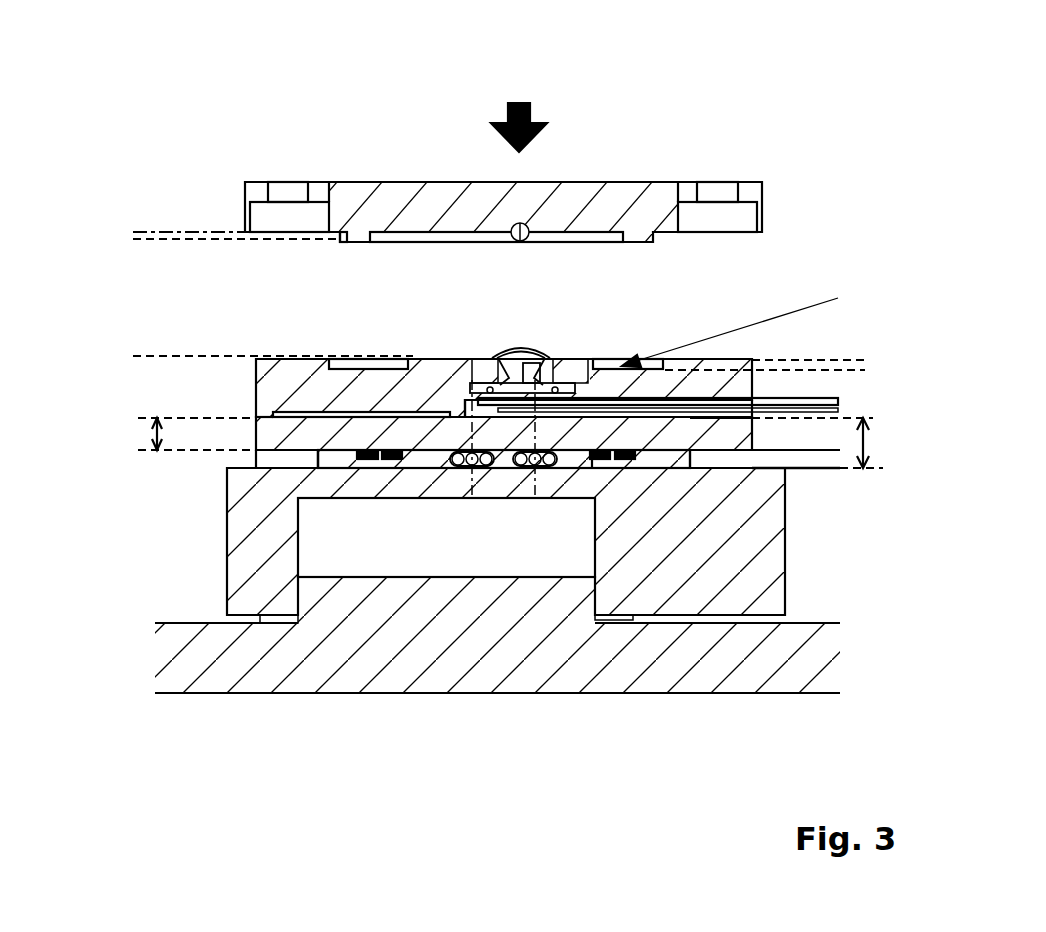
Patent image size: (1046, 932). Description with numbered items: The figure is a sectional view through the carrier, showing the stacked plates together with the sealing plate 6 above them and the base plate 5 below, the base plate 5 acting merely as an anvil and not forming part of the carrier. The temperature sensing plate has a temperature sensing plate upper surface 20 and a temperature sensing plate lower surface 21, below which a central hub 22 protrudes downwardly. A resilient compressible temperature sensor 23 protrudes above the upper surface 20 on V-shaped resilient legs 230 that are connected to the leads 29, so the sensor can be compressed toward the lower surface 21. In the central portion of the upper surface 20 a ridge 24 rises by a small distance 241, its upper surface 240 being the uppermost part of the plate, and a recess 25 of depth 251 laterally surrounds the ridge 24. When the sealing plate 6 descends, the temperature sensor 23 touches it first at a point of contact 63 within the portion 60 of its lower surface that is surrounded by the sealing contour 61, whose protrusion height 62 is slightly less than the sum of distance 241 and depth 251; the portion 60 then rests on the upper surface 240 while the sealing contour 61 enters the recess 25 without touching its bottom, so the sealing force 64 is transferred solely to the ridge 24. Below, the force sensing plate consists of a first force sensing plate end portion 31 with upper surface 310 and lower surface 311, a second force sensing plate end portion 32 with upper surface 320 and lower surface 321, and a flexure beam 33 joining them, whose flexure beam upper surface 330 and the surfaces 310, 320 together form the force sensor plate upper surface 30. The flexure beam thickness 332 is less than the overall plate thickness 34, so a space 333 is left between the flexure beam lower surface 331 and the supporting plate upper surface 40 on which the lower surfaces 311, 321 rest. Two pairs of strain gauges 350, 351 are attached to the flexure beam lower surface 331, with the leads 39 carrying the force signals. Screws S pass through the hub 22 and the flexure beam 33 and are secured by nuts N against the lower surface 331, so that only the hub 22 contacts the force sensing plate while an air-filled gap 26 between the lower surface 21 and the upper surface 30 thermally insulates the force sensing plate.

The base plate 5 is at (158, 657).
The sealing plate 6 is at (463, 152).
The portion of the lower surface of sealing plate 60 is at (435, 245).
The sealing contour 61 is at (343, 235).
The protrusion height 62 is at (133, 232).
The point of contact 63 is at (528, 228).
The sealing force 64 is at (521, 102).
The temperature sensing plate upper surface 20 is at (287, 353).
The temperature sensing plate lower surface 21 is at (303, 421).
The central hub 22 is at (460, 405).
The temperature sensor 23 is at (513, 348).
The resilient legs 230 is at (548, 350).
The ridge 24 is at (598, 360).
The upper surface of ridge 240 is at (591, 358).
The small distance 241 is at (133, 356).
The recess 25 is at (746, 320).
The depth of recess 251 is at (865, 370).
The gap 26 is at (258, 418).
The leads 29 is at (838, 405).
The force sensor plate upper surface 30 is at (368, 413).
The first force sensing plate end portion 31 is at (723, 440).
The upper surface of first end portion 310 is at (747, 414).
The lower surface of first end portion 311 is at (713, 472).
The second force sensing plate end portion 32 is at (275, 444).
The upper surface of second end portion 320 is at (273, 413).
The lower surface of second end portion 321 is at (267, 472).
The flexure beam 33 is at (342, 430).
The flexure beam upper surface 330 is at (418, 413).
The flexure beam lower surface 331 is at (643, 456).
The flexure beam thickness 332 is at (152, 435).
The space 333 is at (423, 460).
The overall plate thickness 34 is at (866, 443).
The strain gauges 350 is at (362, 455).
The strain gauges 351 is at (603, 458).
The leads 39 is at (800, 462).
The supporting plate upper surface 40 is at (660, 464).
The screws S is at (530, 495).
The nuts N is at (557, 455).